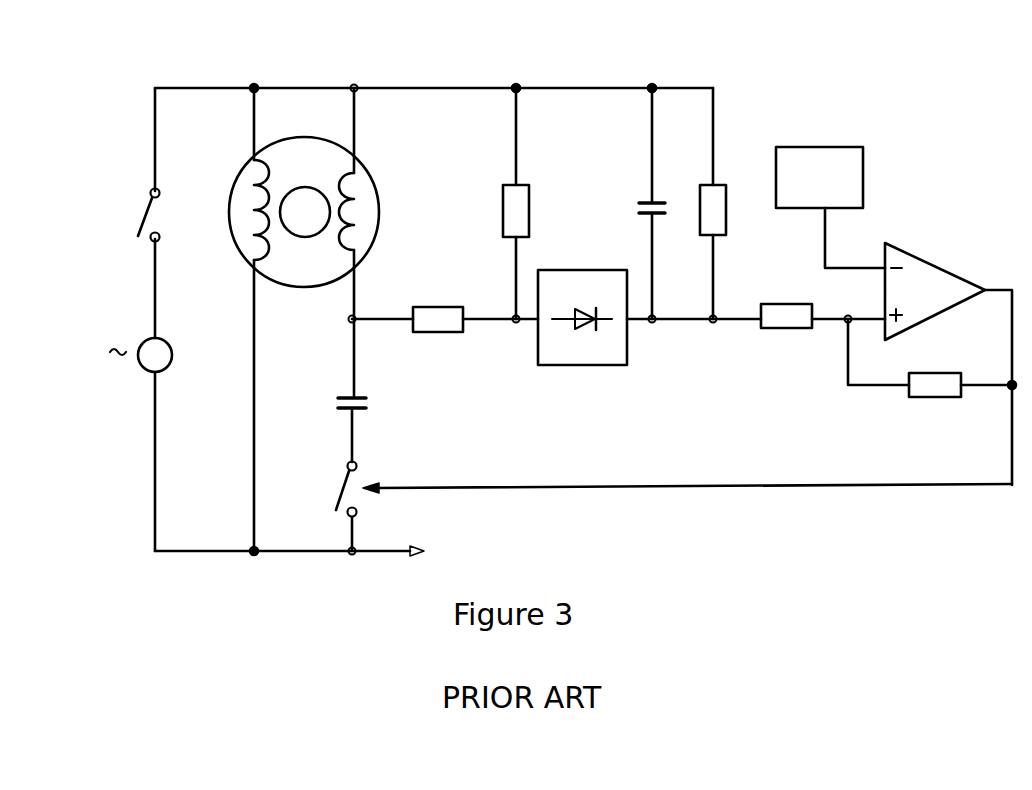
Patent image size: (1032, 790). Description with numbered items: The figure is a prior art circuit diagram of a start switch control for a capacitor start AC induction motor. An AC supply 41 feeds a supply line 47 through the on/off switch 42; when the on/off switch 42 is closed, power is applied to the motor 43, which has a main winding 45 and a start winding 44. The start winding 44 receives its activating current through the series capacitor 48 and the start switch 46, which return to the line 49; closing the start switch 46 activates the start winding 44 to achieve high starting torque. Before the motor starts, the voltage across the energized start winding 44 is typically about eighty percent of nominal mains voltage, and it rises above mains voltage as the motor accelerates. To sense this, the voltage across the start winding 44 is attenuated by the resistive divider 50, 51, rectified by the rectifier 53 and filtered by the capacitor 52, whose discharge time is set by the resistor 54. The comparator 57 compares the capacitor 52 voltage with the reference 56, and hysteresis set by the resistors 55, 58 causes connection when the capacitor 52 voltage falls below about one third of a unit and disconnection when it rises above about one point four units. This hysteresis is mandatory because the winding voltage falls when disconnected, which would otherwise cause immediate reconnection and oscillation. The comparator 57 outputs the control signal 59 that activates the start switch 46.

The AC power source 41 is at (143, 366).
The on/off switch 42 is at (142, 218).
The motor 43 is at (300, 137).
The start winding 44 is at (354, 198).
The motor winding 45 is at (253, 187).
The start switch 46 is at (340, 488).
The supply line 47 is at (410, 87).
The series capacitor 48 is at (365, 394).
The output line 49 is at (367, 555).
The resistive divider 50 is at (437, 305).
The resistive divider 51 is at (529, 196).
The capacitor 52 is at (645, 200).
The rectifier 53 is at (577, 368).
The resistor 54 is at (727, 225).
The resistor 55 is at (788, 330).
The reference 56 is at (825, 147).
The comparator 57 is at (935, 263).
The resistor 58 is at (933, 398).
The control signal 59 is at (638, 483).